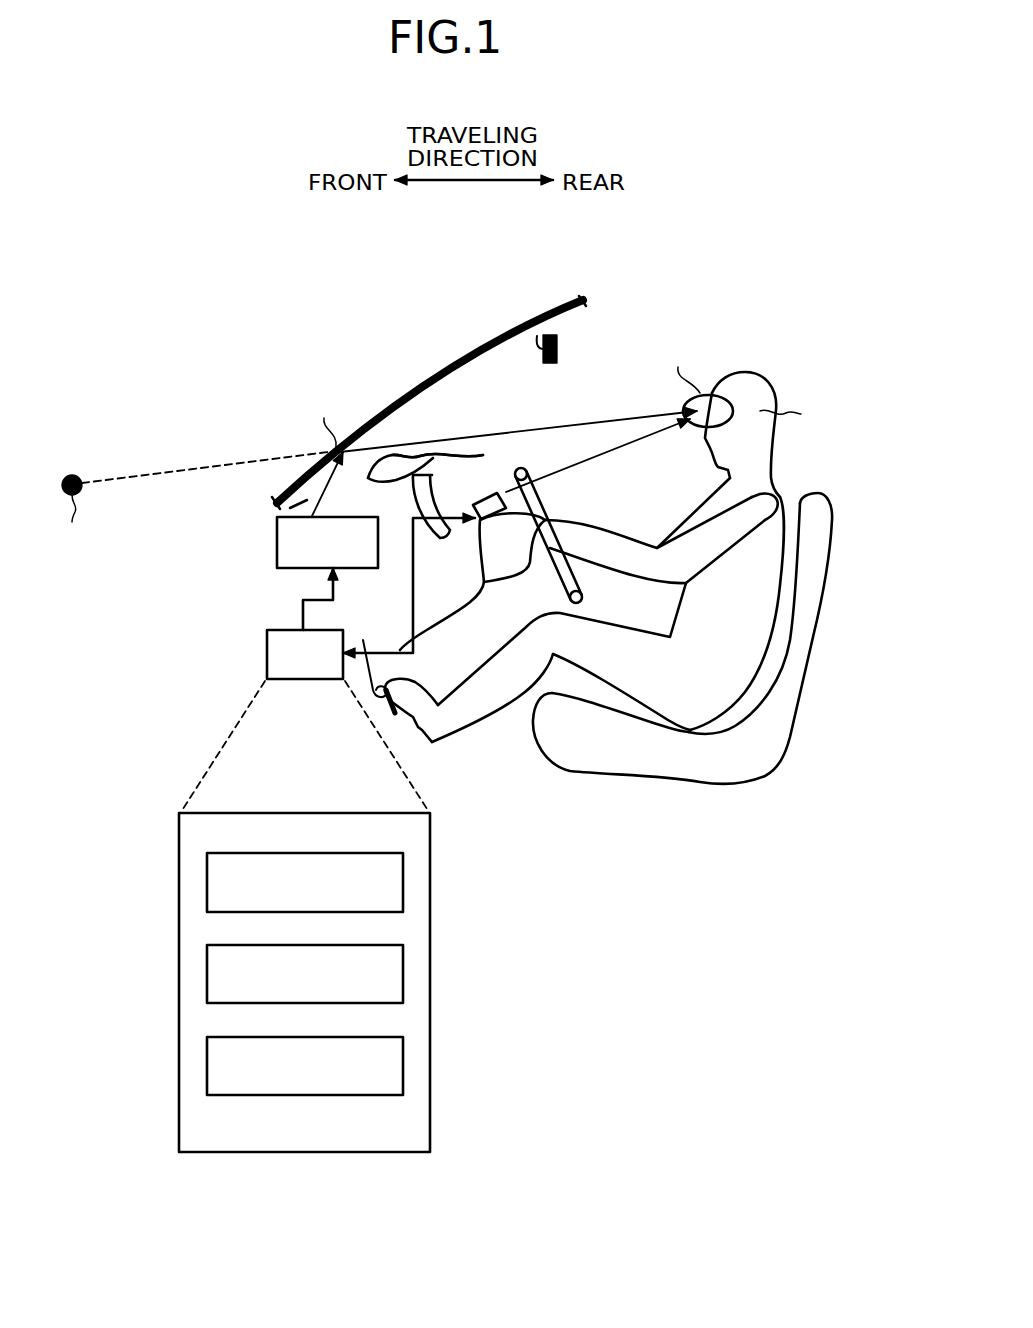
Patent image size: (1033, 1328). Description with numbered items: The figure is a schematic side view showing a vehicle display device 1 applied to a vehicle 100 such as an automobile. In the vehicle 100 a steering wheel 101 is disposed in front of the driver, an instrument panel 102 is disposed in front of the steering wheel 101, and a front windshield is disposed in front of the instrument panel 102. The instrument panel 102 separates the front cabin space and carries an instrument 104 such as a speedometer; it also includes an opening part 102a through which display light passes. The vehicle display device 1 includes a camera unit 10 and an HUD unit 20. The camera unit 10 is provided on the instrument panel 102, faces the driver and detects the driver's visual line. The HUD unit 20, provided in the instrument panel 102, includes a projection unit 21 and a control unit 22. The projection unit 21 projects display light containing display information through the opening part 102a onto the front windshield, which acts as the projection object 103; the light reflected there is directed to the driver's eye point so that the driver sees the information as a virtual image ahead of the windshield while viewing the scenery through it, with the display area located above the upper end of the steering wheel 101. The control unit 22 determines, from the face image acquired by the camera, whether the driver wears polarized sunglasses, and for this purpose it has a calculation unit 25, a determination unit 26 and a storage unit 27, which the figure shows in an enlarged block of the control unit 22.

The vehicle display device 1 is at (527, 447).
The camera unit 10 is at (492, 498).
The HUD unit 20 is at (184, 547).
The projection unit 21 is at (277, 533).
The control unit 22 is at (267, 645).
The calculation unit 25 is at (360, 854).
The determination unit 26 is at (360, 945).
The storage unit 27 is at (360, 1036).
The vehicle 100 is at (722, 262).
The steering wheel 101 is at (545, 505).
The instrument panel 102 is at (483, 455).
The opening part 102a is at (396, 494).
The projection object 103 is at (474, 352).
The instrument 104 is at (458, 497).